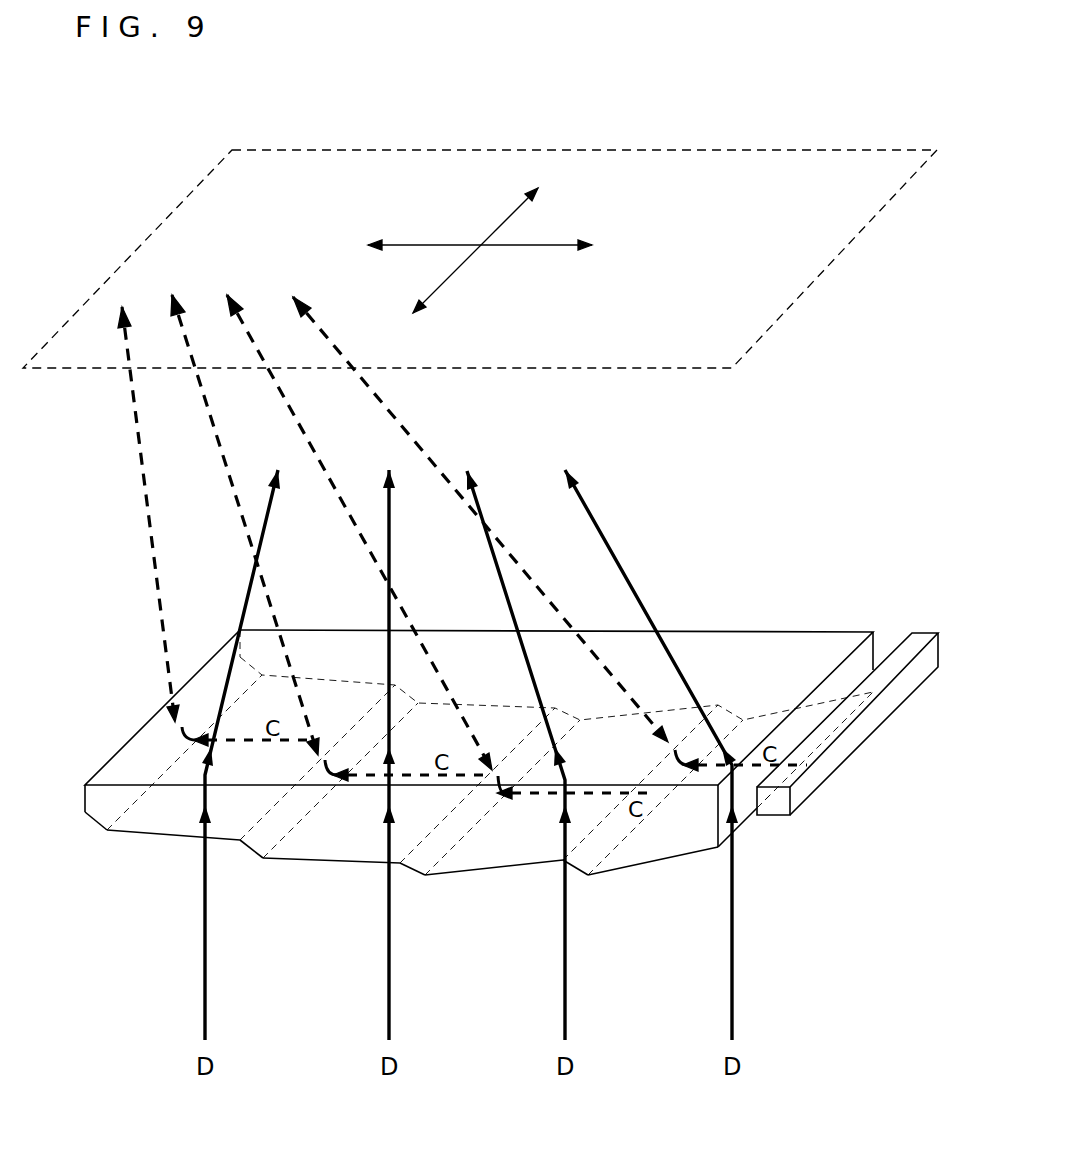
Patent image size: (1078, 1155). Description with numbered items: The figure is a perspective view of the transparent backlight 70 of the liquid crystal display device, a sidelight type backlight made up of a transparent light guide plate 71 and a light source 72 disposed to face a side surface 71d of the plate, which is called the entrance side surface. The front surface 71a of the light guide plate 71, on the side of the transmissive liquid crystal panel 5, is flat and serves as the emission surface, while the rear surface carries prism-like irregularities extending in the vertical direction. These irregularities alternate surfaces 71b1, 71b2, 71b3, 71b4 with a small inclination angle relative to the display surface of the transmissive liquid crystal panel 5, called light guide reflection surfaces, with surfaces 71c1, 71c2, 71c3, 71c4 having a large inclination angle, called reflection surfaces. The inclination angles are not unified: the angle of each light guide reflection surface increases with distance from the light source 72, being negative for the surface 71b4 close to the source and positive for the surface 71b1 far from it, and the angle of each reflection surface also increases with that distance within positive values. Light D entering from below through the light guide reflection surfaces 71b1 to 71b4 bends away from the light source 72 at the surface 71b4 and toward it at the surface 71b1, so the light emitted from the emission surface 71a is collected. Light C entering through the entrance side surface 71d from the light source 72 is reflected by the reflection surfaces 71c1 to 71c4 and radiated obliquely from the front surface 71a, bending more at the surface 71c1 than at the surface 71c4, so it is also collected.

The transmissive liquid crystal panel 5 is at (172, 218).
The transparent backlight 70 is at (913, 538).
The transparent light guide plate 71 is at (795, 628).
The front surface 71a is at (712, 650).
The light guide reflection surface 71b1 is at (165, 826).
The light guide reflection surface 71b2 is at (338, 854).
The light guide reflection surface 71b3 is at (512, 862).
The light guide reflection surface 71b4 is at (678, 847).
The reflection surface 71c1 is at (99, 824).
The reflection surface 71c2 is at (255, 851).
The reflection surface 71c3 is at (415, 877).
The reflection surface 71c4 is at (582, 877).
The side surface 71d is at (863, 655).
The light source 72 is at (920, 628).